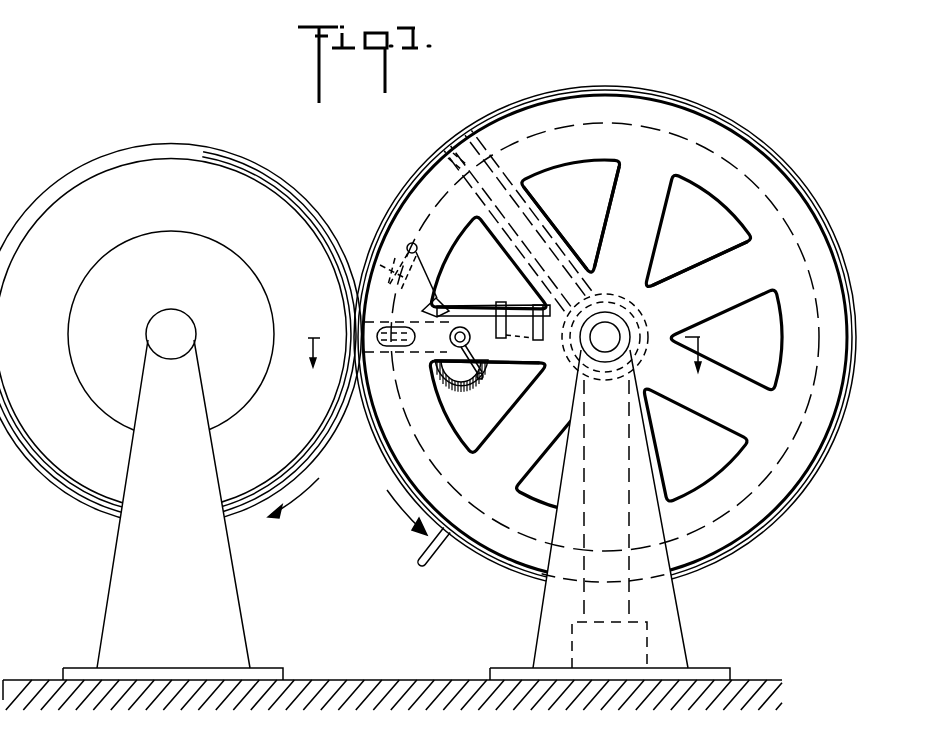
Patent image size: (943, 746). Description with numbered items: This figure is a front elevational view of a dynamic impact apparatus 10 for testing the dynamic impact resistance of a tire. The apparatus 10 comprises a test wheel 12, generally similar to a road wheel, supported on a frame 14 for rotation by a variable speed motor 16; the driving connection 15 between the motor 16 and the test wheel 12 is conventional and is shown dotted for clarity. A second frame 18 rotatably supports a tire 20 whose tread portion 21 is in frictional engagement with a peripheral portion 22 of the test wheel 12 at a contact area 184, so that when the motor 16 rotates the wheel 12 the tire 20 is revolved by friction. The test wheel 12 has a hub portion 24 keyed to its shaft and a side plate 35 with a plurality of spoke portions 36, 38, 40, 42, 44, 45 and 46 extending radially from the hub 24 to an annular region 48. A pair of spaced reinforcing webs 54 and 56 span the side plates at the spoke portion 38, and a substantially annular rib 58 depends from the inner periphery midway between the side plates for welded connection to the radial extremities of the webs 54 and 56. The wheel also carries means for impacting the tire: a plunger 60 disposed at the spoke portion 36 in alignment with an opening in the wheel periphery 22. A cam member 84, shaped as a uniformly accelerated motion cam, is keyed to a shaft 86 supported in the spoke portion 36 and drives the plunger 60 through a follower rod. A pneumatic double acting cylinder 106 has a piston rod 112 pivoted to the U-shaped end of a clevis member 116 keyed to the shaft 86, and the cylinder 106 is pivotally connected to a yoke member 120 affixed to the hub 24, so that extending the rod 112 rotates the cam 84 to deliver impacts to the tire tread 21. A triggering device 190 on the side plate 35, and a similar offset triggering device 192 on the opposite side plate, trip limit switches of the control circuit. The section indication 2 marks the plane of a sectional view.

The dynamic impact apparatus 10 is at (799, 131).
The test wheel 12 is at (830, 223).
The frame 14 is at (675, 588).
The driving connection 15 is at (587, 598).
The motor 16 is at (570, 643).
The frame 18 is at (118, 597).
The tire 20 is at (57, 181).
The tread portion 21 is at (227, 150).
The peripheral portion 22 is at (397, 203).
The hub portion 24 is at (597, 291).
The side plate 35 is at (581, 157).
The spoke portion 36 is at (520, 357).
The spoke portion 38 is at (542, 220).
The spoke portion 40 is at (621, 192).
The spoke portion 42 is at (720, 266).
The spoke portion 44 is at (745, 392).
The spoke portion 45 is at (665, 483).
The spoke portion 46 is at (513, 430).
The annular region 48 is at (766, 202).
The reinforcing web 54 is at (437, 153).
The reinforcing web 56 is at (473, 124).
The annular rib 58 is at (600, 118).
The plunger 60 is at (397, 347).
The cam member 84 is at (467, 388).
The shaft 86 is at (481, 380).
The pneumatic double acting cylinder 106 is at (517, 305).
The piston rod 112 is at (460, 310).
The clevis member 116 is at (444, 283).
The yoke member 120 is at (705, 258).
The contact area 184 is at (358, 327).
The triggering device 190 is at (407, 245).
The triggering device 192 is at (390, 270).
The section line 2- 2 is at (509, 367).